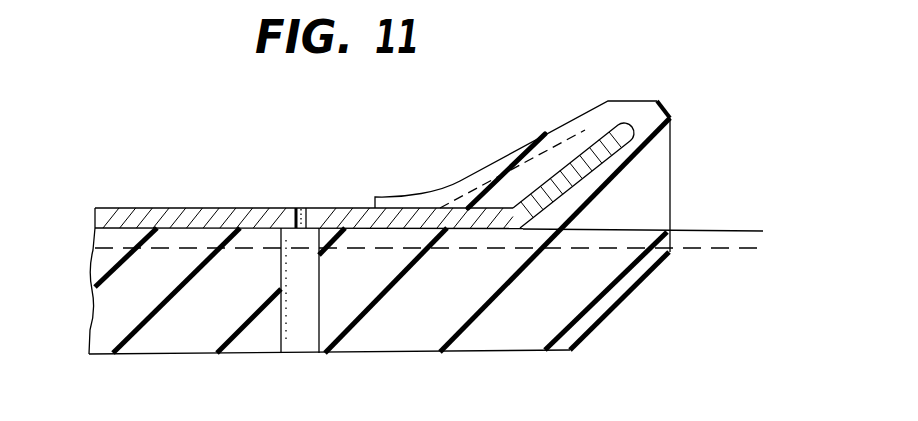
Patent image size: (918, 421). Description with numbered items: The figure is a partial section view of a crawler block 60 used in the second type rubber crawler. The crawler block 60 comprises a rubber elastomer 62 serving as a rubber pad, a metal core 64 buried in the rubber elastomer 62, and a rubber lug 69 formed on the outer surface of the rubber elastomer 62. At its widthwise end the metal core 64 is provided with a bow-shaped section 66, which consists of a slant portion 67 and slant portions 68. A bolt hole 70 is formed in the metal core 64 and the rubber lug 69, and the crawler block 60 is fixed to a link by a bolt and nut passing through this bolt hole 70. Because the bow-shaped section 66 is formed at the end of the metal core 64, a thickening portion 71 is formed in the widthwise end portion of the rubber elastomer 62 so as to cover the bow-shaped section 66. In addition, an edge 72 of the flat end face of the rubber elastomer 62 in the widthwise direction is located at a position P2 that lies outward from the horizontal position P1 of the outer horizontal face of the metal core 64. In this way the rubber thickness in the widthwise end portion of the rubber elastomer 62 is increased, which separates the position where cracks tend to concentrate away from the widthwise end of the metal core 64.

The crawler block 60 is at (488, 170).
The rubber elastomer 62 is at (588, 117).
The metal core 64 is at (170, 207).
The bow-shaped section 66 is at (583, 185).
The slant portion 67 is at (603, 152).
The slant portions 68 is at (558, 145).
The rubber lug 69 is at (523, 317).
The bolt hole 70 is at (315, 325).
The thickening portion 71 is at (623, 202).
The edge of flat end face 72 is at (669, 253).
The horizontal position of outer horizontal face of metal core P1 is at (783, 231).
The position of edge of rubber elastomer end face P2 is at (446, 254).